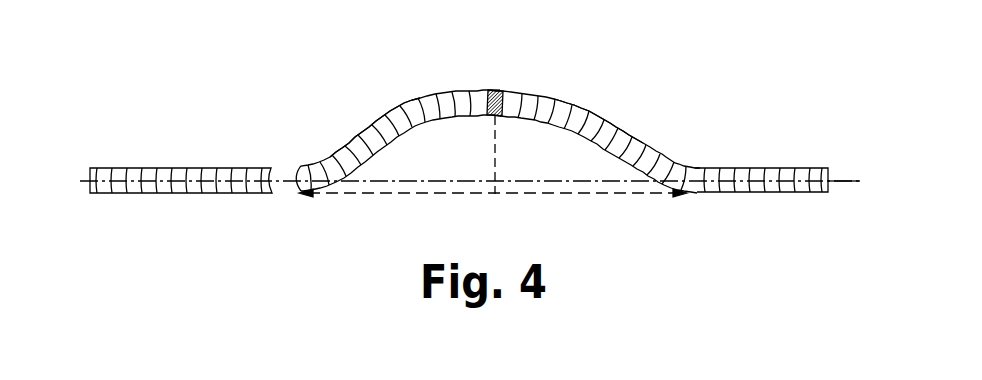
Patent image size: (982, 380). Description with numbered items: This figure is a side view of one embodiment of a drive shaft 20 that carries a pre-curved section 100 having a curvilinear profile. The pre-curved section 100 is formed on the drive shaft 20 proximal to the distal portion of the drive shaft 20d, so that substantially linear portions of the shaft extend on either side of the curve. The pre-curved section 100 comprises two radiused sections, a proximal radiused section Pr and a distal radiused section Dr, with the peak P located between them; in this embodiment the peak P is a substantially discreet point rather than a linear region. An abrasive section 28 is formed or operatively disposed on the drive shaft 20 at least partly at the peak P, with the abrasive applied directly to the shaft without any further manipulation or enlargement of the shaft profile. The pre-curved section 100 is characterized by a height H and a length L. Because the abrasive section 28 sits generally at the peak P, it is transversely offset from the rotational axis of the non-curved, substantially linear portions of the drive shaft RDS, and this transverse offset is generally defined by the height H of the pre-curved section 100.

The drive shaft 20 is at (210, 150).
The pre-curved section 100 is at (683, 43).
The abrasive section 28 is at (491, 91).
The peak P is at (500, 91).
The proximal radiused section Pr is at (408, 139).
The distal radiused section Dr is at (573, 133).
The height H is at (497, 166).
The length L is at (574, 195).
The distal portion of drive shaft 20d is at (828, 161).
The rotational axis of drive shaft RDS is at (840, 183).